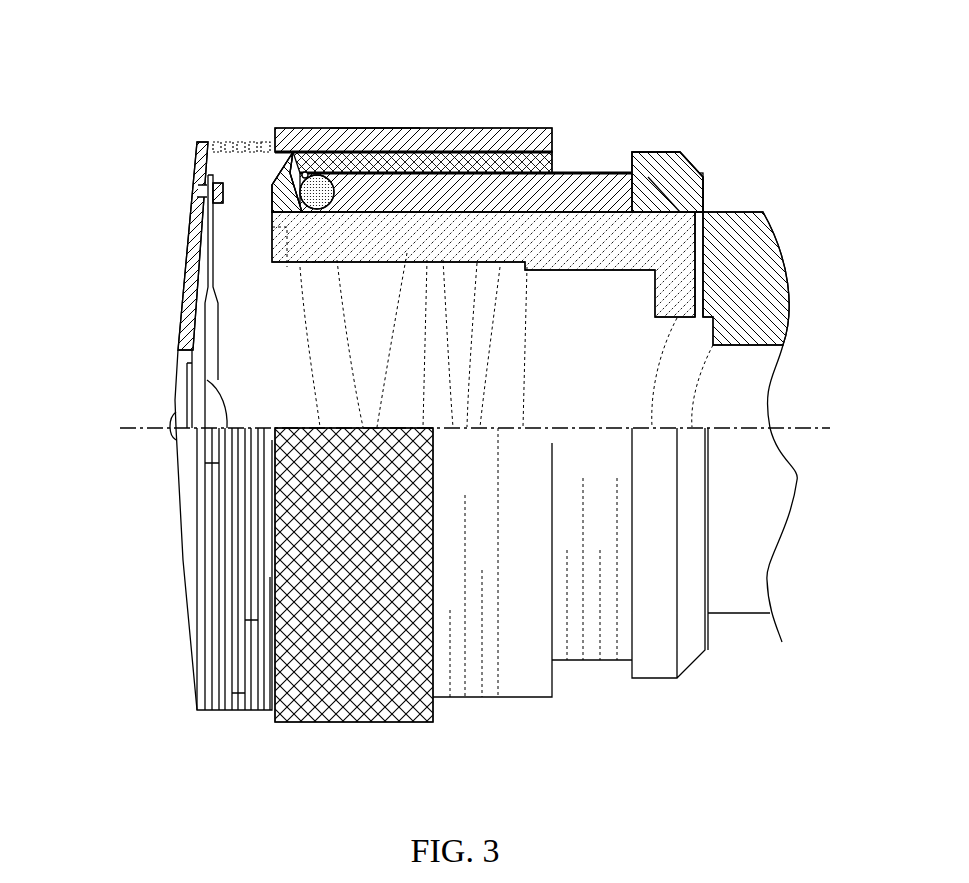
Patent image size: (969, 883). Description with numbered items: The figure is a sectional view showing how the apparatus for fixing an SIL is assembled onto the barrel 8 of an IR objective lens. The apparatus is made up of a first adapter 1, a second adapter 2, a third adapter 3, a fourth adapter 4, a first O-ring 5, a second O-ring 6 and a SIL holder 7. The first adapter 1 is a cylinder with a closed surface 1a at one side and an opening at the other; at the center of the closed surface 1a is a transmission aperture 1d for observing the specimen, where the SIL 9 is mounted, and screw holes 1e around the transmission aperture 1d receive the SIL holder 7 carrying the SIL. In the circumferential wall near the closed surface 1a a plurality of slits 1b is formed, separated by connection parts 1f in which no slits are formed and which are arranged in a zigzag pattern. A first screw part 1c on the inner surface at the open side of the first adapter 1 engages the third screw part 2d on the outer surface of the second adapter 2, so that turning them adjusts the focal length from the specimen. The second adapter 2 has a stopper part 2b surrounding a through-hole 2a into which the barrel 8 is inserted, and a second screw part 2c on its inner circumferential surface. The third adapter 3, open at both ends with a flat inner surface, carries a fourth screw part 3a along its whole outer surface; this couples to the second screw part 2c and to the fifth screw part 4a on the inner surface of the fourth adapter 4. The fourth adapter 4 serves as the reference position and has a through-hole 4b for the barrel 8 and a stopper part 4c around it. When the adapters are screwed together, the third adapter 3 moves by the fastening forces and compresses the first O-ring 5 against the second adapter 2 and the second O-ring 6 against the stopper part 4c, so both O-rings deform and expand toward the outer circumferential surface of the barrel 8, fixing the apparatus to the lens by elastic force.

The first adapter 1 is at (290, 137).
The closed surface 1a is at (181, 292).
The slits 1b is at (222, 712).
The first screw part 1c is at (368, 130).
The transmission aperture 1d is at (185, 390).
The screw holes 1e is at (197, 197).
The connection parts 1f is at (267, 563).
The second adapter 2 is at (488, 173).
The through-hole 2a is at (263, 148).
The stopper part 2b is at (272, 158).
The second screw part 2c is at (500, 170).
The third screw part 2d is at (443, 150).
The third adapter 3 is at (650, 207).
The fourth screw part 3a is at (577, 220).
The fourth adapter 4 is at (683, 170).
The fifth screw part 4a is at (667, 180).
The through-hole 4b is at (705, 210).
The stopper part 4c is at (703, 175).
The first O-ring 5 is at (323, 178).
The second O-ring 6 is at (698, 193).
The SIL holder 7 is at (207, 242).
The barrel 8 is at (602, 193).
The SIL 9 is at (215, 412).